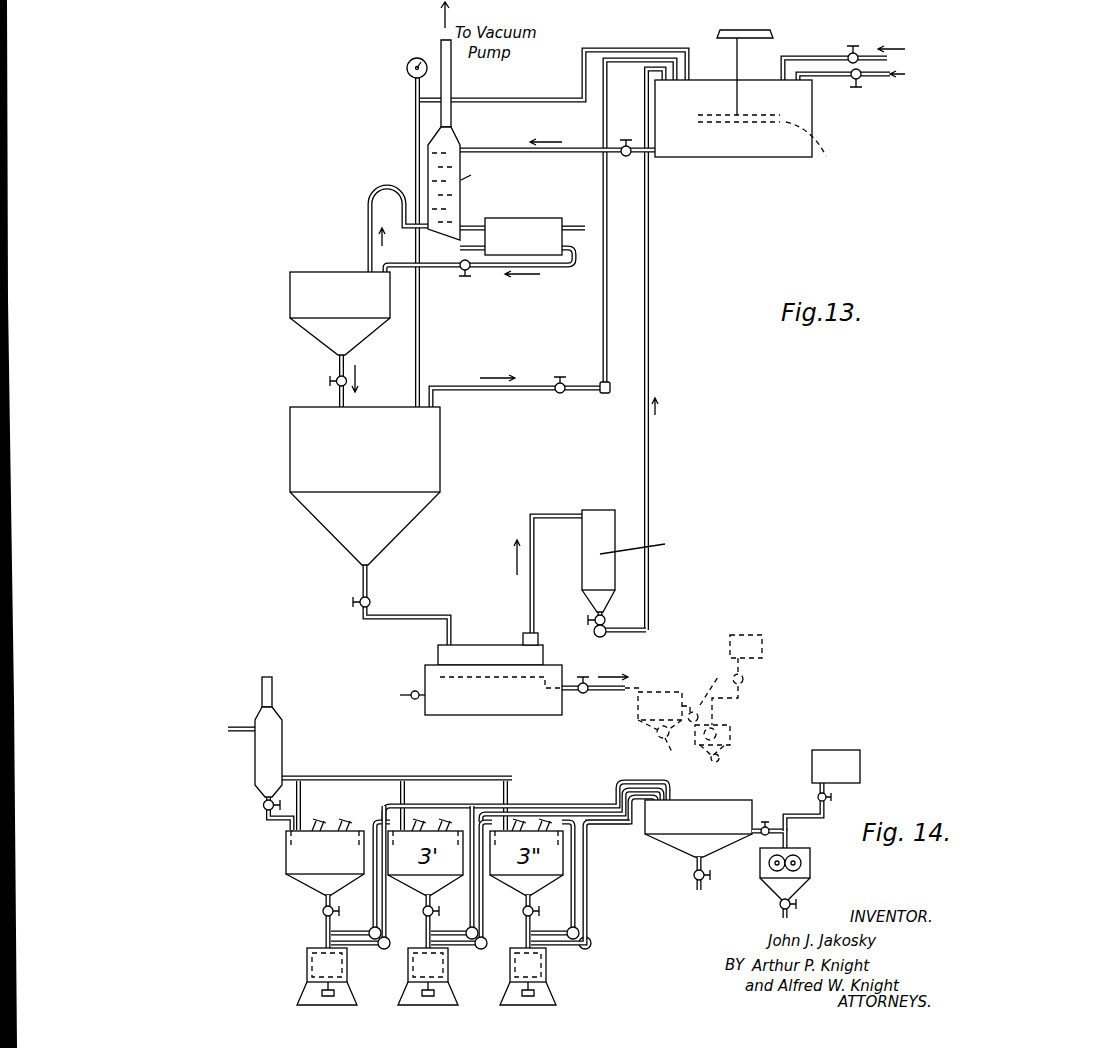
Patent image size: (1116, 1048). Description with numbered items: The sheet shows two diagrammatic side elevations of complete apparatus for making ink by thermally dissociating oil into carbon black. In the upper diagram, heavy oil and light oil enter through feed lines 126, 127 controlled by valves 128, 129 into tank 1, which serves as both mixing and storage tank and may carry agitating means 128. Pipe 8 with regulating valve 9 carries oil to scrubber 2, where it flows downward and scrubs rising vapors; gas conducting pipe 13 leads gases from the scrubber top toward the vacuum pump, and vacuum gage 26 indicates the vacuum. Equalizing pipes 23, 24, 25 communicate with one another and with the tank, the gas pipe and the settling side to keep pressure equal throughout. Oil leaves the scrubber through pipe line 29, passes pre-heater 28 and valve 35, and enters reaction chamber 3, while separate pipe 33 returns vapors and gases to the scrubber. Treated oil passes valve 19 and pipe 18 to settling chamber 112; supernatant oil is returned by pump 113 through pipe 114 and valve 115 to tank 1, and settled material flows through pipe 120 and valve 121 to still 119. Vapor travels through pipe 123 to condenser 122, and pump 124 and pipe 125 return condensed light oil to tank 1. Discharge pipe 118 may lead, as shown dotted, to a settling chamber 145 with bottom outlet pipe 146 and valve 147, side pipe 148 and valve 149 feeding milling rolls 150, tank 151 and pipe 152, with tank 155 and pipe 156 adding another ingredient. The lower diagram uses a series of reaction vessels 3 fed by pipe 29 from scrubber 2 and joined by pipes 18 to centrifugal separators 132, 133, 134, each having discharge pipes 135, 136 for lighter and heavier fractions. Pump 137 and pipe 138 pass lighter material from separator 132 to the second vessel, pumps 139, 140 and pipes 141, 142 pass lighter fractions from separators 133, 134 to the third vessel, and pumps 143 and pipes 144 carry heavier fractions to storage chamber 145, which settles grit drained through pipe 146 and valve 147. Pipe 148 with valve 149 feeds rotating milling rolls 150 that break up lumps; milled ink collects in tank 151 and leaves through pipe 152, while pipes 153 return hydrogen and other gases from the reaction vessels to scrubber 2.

In FIG. 13, the oil supply chamber 1 is at (813, 112).
In FIG. 13, the scrubber 2 is at (462, 200).
In FIG. 14, the scrubber 2 is at (283, 746).
In FIG. 13, the reaction vessel 3 is at (290, 296).
In FIG. 14, the reaction vessel 3 is at (325, 857).
In FIG. 13, the pipe 8 is at (577, 154).
In FIG. 14, the pipe 8 is at (236, 731).
In FIG. 13, the regulating valve 9 is at (625, 158).
In FIG. 13, the gas conducting pipe 13 is at (452, 76).
In FIG. 14, the gas conducting pipe 13 is at (273, 691).
In FIG. 13, the pipe 18 is at (337, 392).
In FIG. 14, the pipe 18 is at (325, 934).
In FIG. 13, the valve 19 is at (330, 376).
In FIG. 14, the valve 19 is at (323, 912).
In FIG. 13, the equalizing pipe 23 is at (546, 104).
In FIG. 13, the equalizing pipe 24 is at (420, 96).
In FIG. 13, the equalizing pipe 25 is at (415, 166).
In FIG. 13, the vacuum gage 26 is at (406, 71).
In FIG. 13, the pre-heater 28 is at (528, 219).
In FIG. 13, the pipe line 29 is at (488, 270).
In FIG. 14, the pipe line 29 is at (273, 824).
In FIG. 13, the pipe 33 is at (368, 220).
In FIG. 13, the valve 35 is at (462, 274).
In FIG. 14, the valve 35 is at (263, 806).
In FIG. 13, the settling chamber 112 is at (441, 479).
In FIG. 13, the pump 113 is at (604, 394).
In FIG. 13, the pipe 114 is at (603, 311).
In FIG. 13, the valve 115 is at (558, 394).
In FIG. 13, the discharge pipe 118 is at (610, 690).
In FIG. 13, the still 119 is at (509, 645).
In FIG. 13, the pipe 120 is at (426, 618).
In FIG. 13, the valve 121 is at (370, 605).
In FIG. 13, the condenser 122 is at (598, 515).
In FIG. 13, the pipe 123 is at (566, 518).
In FIG. 13, the pump 124 is at (606, 636).
In FIG. 13, the pipe 125 is at (651, 614).
In FIG. 13, the feed line 126 is at (878, 60).
In FIG. 13, the feed line 127 is at (878, 84).
In FIG. 13, the valve 128 is at (852, 50).
In FIG. 13, the valve 129 is at (856, 90).
In FIG. 14, the centrifugal separator 132 is at (308, 965).
In FIG. 14, the centrifugal separator 133 is at (448, 966).
In FIG. 14, the centrifugal separator 134 is at (510, 966).
In FIG. 14, the discharge pipe 135 is at (361, 934).
In FIG. 14, the discharge pipe 136 is at (362, 946).
In FIG. 14, the pump 137 is at (386, 920).
In FIG. 14, the pipe 138 is at (375, 880).
In FIG. 14, the pump 139 is at (468, 928).
In FIG. 14, the pump 140 is at (537, 912).
In FIG. 14, the pipe 141 is at (472, 892).
In FIG. 14, the pipe 142 is at (588, 894).
In FIG. 14, the pump 143 is at (387, 947).
In FIG. 14, the pipe 144 is at (472, 812).
In FIG. 13, the storage chamber 145 is at (666, 697).
In FIG. 14, the storage chamber 145 is at (698, 828).
In FIG. 13, the drain pipe 146 is at (657, 735).
In FIG. 14, the drain pipe 146 is at (704, 858).
In FIG. 13, the valve 147 is at (675, 750).
In FIG. 14, the valve 147 is at (706, 880).
In FIG. 13, the pipe 148 is at (719, 680).
In FIG. 14, the pipe 148 is at (783, 830).
In FIG. 13, the valve 149 is at (697, 711).
In FIG. 14, the valve 149 is at (766, 824).
In FIG. 13, the milling rolls 150 is at (730, 728).
In FIG. 14, the milling rolls 150 is at (796, 849).
In FIG. 13, the tank 151 is at (730, 740).
In FIG. 14, the tank 151 is at (810, 871).
In FIG. 13, the pipe 152 is at (722, 760).
In FIG. 14, the pipe 152 is at (797, 906).
In FIG. 14, the pipe 153 is at (302, 806).
In FIG. 13, the tank 155 is at (763, 640).
In FIG. 14, the tank 155 is at (836, 766).
In FIG. 13, the pipe 156 is at (744, 698).
In FIG. 14, the pipe 156 is at (832, 798).